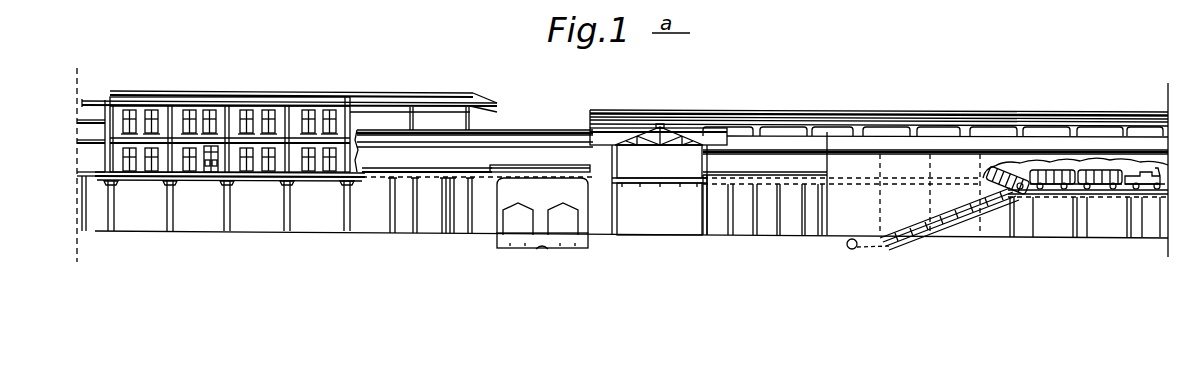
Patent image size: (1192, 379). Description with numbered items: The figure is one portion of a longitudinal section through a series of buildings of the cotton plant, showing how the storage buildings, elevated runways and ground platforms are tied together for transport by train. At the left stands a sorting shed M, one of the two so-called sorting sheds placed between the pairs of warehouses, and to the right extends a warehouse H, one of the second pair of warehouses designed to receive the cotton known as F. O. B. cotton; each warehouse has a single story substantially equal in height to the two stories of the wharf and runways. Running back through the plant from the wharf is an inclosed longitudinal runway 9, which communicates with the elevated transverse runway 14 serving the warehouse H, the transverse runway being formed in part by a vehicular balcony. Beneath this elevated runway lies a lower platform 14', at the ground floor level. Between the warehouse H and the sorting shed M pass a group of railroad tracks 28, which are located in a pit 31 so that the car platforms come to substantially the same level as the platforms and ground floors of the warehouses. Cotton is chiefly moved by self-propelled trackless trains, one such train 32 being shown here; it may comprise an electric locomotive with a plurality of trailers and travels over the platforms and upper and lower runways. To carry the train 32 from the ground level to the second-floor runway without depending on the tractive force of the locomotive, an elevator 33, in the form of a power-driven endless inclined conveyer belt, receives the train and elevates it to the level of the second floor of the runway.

The sorting shed M is at (296, 67).
The warehouse H is at (990, 94).
The longitudinal runway 9 is at (761, 182).
The transverse runway 14 is at (658, 179).
The lower platform 14' is at (659, 209).
The group of railroad tracks 28 is at (527, 250).
The pit 31 is at (542, 250).
The self-propelled trackless train 32 is at (1068, 170).
The elevator 33 is at (921, 240).